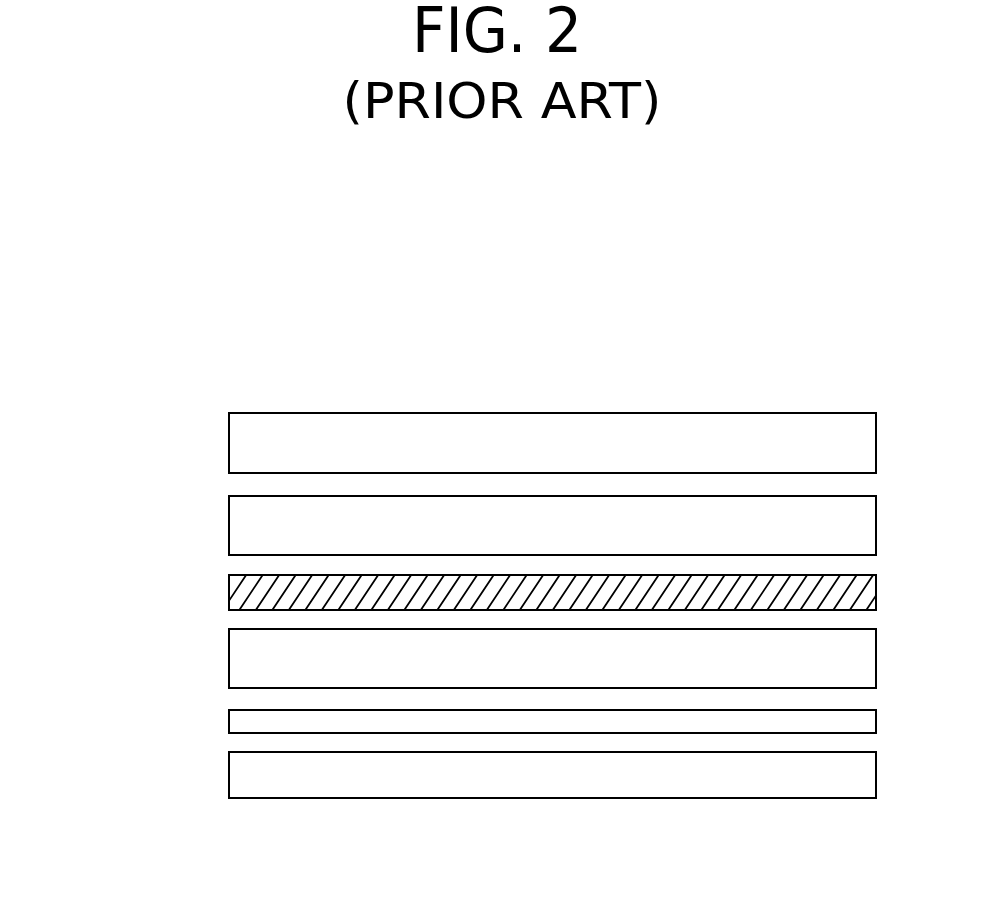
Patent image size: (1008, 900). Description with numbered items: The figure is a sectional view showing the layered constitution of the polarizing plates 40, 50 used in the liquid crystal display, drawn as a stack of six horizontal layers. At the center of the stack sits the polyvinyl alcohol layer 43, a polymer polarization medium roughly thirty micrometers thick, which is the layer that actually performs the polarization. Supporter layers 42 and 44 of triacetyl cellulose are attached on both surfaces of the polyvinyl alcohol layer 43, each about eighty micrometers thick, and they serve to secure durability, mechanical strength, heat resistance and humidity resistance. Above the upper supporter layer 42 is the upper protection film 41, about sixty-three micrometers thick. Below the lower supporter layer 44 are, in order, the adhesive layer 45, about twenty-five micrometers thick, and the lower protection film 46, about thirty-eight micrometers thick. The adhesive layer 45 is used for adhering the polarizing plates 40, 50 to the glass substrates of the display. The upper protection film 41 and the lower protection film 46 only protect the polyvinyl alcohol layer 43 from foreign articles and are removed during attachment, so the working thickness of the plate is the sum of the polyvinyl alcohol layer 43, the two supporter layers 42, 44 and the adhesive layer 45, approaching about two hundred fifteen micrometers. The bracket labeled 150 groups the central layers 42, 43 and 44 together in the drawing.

The polarizing plate 40 is at (760, 360).
The polarizing plate 50 is at (552, 605).
The upper protection film 41 is at (250, 442).
The upper supporter layer 42 is at (250, 526).
The polyvinyl alcohol layer 43 is at (250, 597).
The lower supporter layer 44 is at (250, 657).
The adhesive layer 45 is at (250, 722).
The lower protection film 46 is at (250, 782).
The liquid crystal cell 150 is at (120, 535).